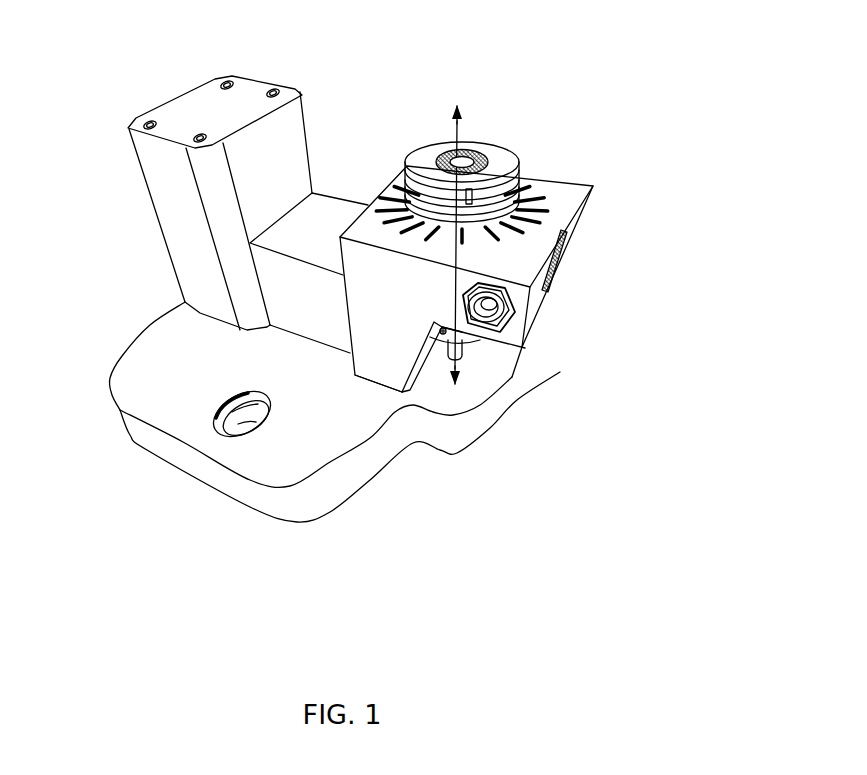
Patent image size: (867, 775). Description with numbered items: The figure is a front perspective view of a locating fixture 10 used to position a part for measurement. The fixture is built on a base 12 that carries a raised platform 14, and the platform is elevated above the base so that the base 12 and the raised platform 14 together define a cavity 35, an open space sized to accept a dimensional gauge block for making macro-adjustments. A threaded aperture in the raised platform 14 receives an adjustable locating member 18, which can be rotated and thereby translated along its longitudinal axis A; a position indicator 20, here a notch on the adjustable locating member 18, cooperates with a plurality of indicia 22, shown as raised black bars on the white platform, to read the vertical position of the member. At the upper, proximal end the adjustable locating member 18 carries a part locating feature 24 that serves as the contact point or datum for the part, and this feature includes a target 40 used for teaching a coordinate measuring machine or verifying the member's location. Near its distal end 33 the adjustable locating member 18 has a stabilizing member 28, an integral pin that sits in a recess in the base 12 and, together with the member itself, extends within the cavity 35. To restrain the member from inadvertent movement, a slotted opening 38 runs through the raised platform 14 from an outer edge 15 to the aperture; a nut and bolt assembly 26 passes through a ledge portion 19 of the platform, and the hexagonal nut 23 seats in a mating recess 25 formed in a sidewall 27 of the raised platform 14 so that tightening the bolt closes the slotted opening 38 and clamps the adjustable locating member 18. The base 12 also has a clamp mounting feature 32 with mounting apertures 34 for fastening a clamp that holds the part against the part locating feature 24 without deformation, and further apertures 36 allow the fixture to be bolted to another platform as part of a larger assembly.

The locating fixture 10 is at (658, 158).
The base 12 is at (130, 373).
The raised platform 14 is at (573, 213).
The outer edge 15 is at (540, 301).
The adjustable locating member 18 is at (406, 199).
The ledge portion 19 is at (576, 182).
The position indicator 20 is at (473, 191).
The indicia 22 is at (382, 229).
The nut 23 is at (523, 348).
The part locating feature 24 is at (493, 155).
The mating recess 25 is at (456, 294).
The nut and bolt assembly 26 is at (520, 315).
The sidewall 27 is at (355, 380).
The stabilizing member 28 is at (465, 362).
The clamp mounting feature 32 is at (205, 105).
The distal end 33 is at (478, 349).
The mounting apertures 34 is at (126, 127).
The cavity 35 is at (508, 373).
The apertures 36 is at (206, 420).
The slotted opening 38 is at (566, 256).
The target 40 is at (468, 150).